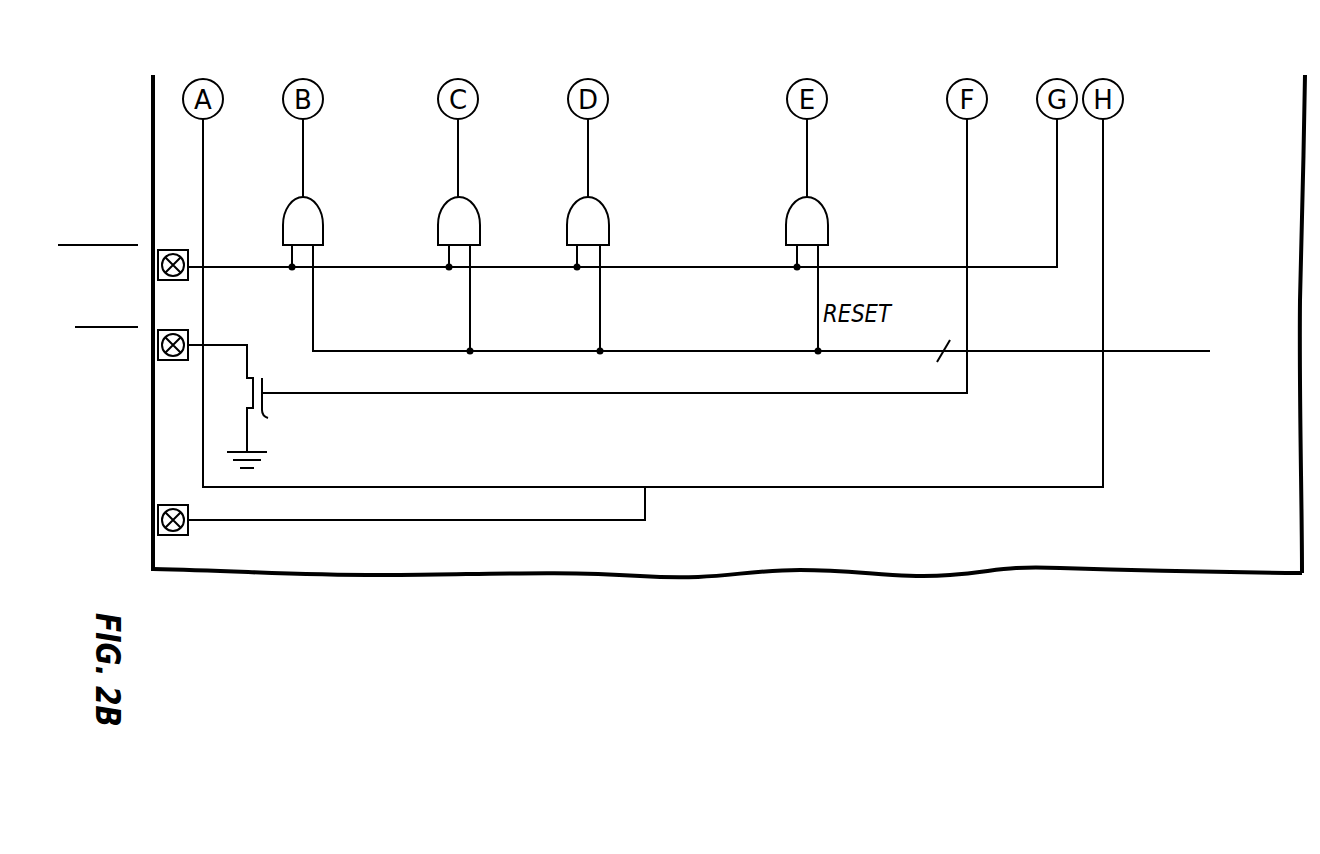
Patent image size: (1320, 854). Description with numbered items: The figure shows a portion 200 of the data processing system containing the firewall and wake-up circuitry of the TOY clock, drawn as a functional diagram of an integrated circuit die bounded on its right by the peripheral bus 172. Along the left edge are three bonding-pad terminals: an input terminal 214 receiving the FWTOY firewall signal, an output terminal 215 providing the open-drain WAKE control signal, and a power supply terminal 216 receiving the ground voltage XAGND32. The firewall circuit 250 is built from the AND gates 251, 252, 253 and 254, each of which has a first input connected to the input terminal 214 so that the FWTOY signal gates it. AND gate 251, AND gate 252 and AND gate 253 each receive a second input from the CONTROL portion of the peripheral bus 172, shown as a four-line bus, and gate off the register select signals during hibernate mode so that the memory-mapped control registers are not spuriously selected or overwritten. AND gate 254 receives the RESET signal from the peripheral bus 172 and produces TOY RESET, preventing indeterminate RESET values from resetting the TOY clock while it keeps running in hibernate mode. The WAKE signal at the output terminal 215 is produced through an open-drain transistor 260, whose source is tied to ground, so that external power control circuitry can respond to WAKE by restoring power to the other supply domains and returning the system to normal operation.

The peripheral bus 172 is at (1225, 376).
The portion of data processing system 200 is at (1160, 550).
The input terminal 214 is at (188, 257).
The output terminal 215 is at (188, 335).
The power supply terminal 216 is at (188, 530).
The firewall circuit 250 is at (284, 182).
The AND gate 251 is at (321, 208).
The AND gate 252 is at (478, 208).
The AND gate 253 is at (608, 208).
The AND gate 254 is at (827, 208).
The transistor 260 is at (266, 416).